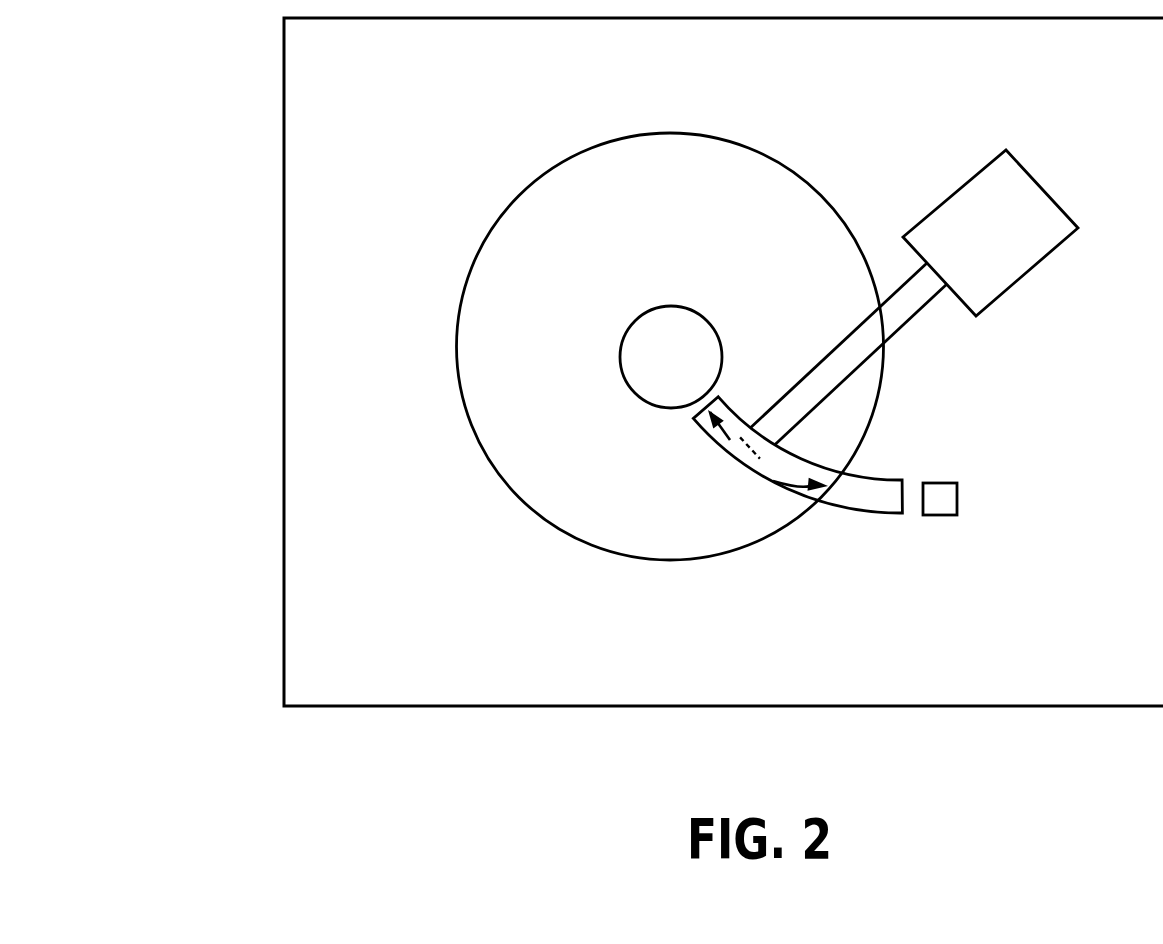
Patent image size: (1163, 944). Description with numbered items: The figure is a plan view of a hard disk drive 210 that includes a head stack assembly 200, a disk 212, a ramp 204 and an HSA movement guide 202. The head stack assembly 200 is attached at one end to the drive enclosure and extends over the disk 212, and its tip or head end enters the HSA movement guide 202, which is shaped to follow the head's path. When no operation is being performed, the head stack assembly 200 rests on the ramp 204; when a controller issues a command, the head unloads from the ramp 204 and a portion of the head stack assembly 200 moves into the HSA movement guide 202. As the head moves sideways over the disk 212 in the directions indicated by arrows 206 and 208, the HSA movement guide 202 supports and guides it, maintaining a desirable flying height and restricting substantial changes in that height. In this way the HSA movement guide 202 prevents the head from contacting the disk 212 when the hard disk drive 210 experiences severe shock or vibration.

The head stack assembly 200 is at (909, 288).
The HSA movement guide 202 is at (911, 426).
The ramp 204 is at (991, 539).
The arrow 206 is at (666, 439).
The arrow 208 is at (751, 493).
The hard disk drive 210 is at (224, 164).
The disk 212 is at (533, 442).